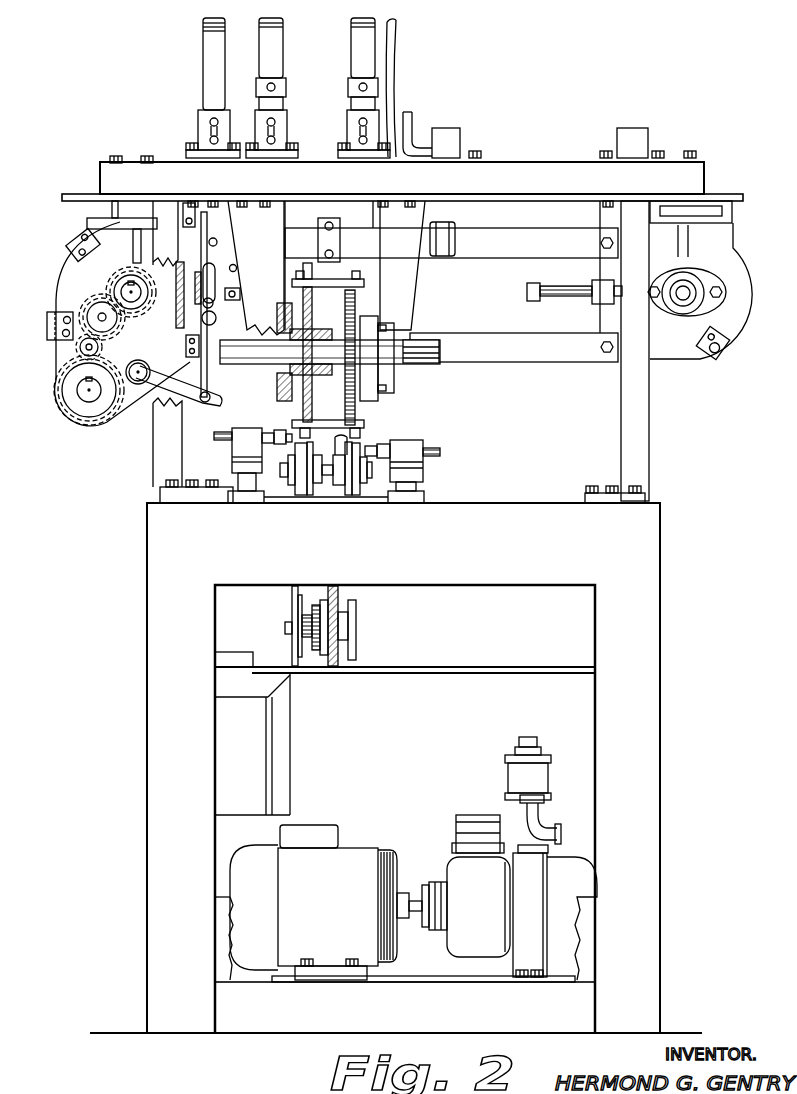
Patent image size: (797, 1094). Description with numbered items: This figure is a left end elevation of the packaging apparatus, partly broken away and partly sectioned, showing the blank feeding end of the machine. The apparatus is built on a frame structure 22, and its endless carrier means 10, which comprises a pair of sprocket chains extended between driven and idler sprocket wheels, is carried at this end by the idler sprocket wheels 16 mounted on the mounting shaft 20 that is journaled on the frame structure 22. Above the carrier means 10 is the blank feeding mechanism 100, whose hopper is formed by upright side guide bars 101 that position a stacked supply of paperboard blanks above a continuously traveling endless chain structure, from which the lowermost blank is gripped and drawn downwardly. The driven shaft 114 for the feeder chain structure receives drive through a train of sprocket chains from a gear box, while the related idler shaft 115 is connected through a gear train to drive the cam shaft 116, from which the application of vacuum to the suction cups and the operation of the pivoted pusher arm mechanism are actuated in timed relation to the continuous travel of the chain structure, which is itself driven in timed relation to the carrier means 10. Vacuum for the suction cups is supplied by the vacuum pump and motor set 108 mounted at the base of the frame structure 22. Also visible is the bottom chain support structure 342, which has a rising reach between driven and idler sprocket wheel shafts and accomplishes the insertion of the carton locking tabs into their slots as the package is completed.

The blank feeding mechanism 100 is at (172, 88).
The upright side guide bars 101 is at (210, 88).
The idler shaft 115 is at (128, 291).
The cam shaft 116 is at (88, 395).
The driven shaft 114 is at (684, 294).
The idler sprocket wheels 16 is at (326, 403).
The mounting shaft 20 is at (414, 366).
The endless carrier means 10 is at (355, 350).
The bottom chain support structure 342 is at (357, 446).
The frame structure 22 is at (142, 745).
The vacuum pump and motor set 108 is at (450, 857).